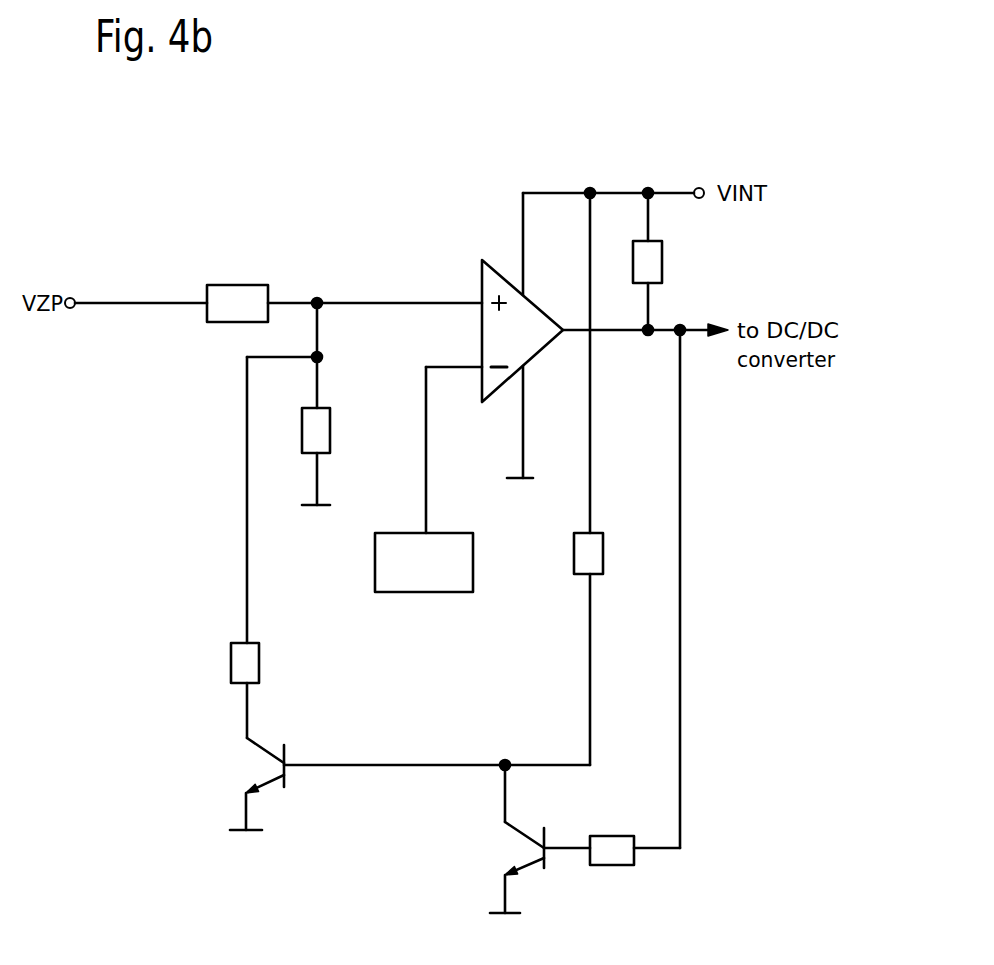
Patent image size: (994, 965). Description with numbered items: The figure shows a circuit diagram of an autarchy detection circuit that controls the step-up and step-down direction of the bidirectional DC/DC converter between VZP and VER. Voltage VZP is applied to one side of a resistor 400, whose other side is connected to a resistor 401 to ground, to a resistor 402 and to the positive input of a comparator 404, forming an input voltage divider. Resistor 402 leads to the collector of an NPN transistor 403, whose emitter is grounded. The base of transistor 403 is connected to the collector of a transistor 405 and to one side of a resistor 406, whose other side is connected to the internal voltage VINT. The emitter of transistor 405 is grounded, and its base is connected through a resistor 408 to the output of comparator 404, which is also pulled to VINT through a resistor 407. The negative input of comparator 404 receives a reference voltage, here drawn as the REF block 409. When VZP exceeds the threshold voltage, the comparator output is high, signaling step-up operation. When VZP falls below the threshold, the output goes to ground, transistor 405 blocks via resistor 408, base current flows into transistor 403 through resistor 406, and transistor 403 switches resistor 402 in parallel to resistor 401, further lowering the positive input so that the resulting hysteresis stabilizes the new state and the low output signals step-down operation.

The resistor 400 is at (240, 284).
The resistor 401 is at (330, 432).
The resistor 402 is at (230, 662).
The NPN transistor 403 is at (285, 783).
The comparator 404 is at (490, 260).
The transistor 405 is at (548, 868).
The resistor 406 is at (573, 550).
The resistor 407 is at (662, 265).
The resistor 408 is at (613, 836).
The reference voltage source 409 is at (421, 595).